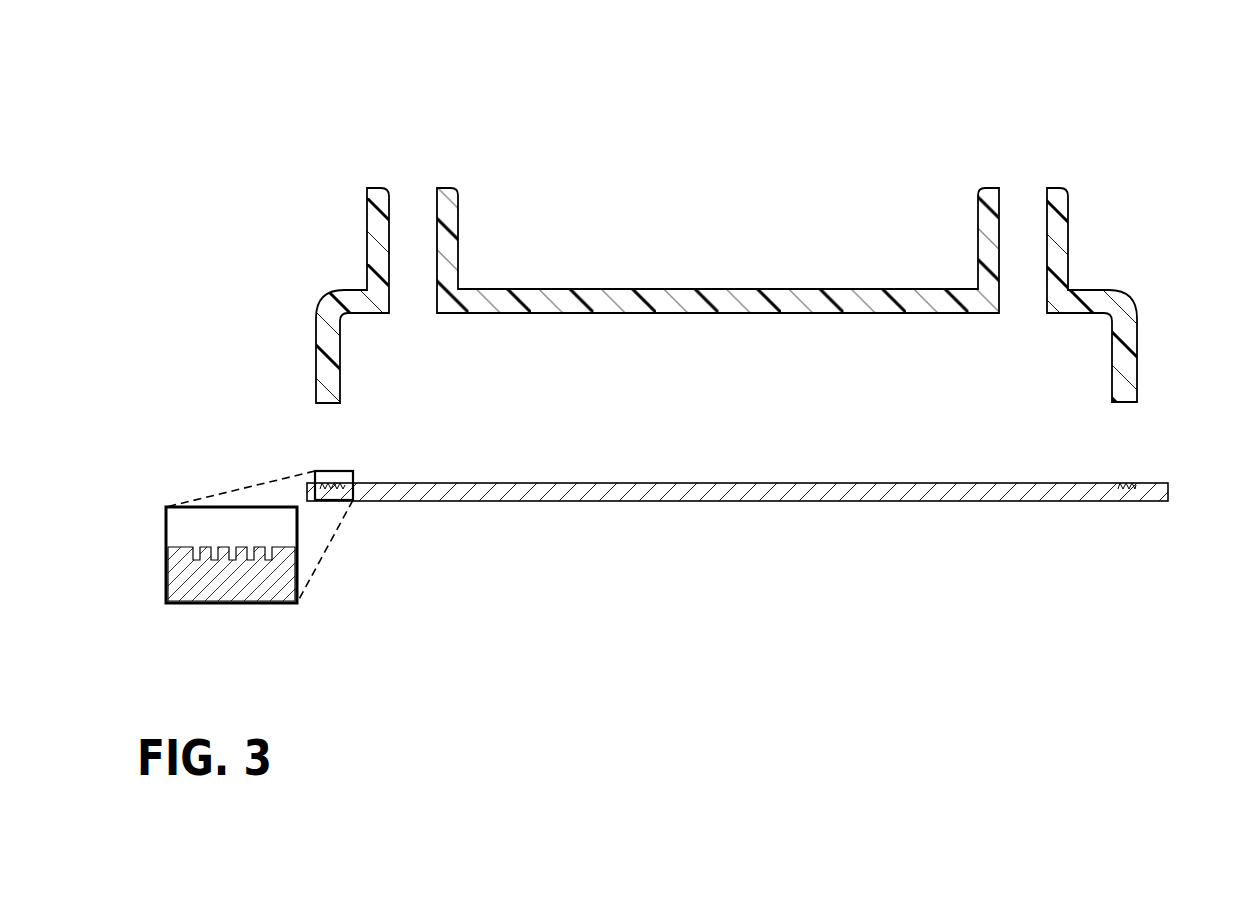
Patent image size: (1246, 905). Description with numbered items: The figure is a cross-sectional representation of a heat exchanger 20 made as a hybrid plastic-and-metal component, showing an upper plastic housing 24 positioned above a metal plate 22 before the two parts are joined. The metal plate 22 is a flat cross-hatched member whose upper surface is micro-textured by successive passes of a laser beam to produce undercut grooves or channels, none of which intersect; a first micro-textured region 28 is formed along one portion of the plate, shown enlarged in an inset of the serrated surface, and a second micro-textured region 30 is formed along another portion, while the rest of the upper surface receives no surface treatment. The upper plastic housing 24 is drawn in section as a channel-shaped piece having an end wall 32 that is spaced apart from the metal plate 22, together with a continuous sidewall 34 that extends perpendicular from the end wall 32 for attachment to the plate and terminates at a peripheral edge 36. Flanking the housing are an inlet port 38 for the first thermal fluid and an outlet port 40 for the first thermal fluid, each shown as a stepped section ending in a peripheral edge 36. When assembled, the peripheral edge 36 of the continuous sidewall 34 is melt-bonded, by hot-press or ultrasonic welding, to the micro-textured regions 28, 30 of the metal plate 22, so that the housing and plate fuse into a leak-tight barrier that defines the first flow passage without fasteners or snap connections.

The heat exchanger 20 is at (612, 158).
The metal plate 22 is at (713, 490).
The upper plastic housing 24 is at (862, 288).
The first micro-textured region 28 is at (338, 482).
The second micro-textured region 30 is at (1125, 480).
The end wall 32 is at (695, 302).
The continuous sidewall 34 is at (316, 318).
The peripheral edge 36 is at (327, 405).
The inlet port 38 is at (1070, 203).
The outlet port 40 is at (370, 200).